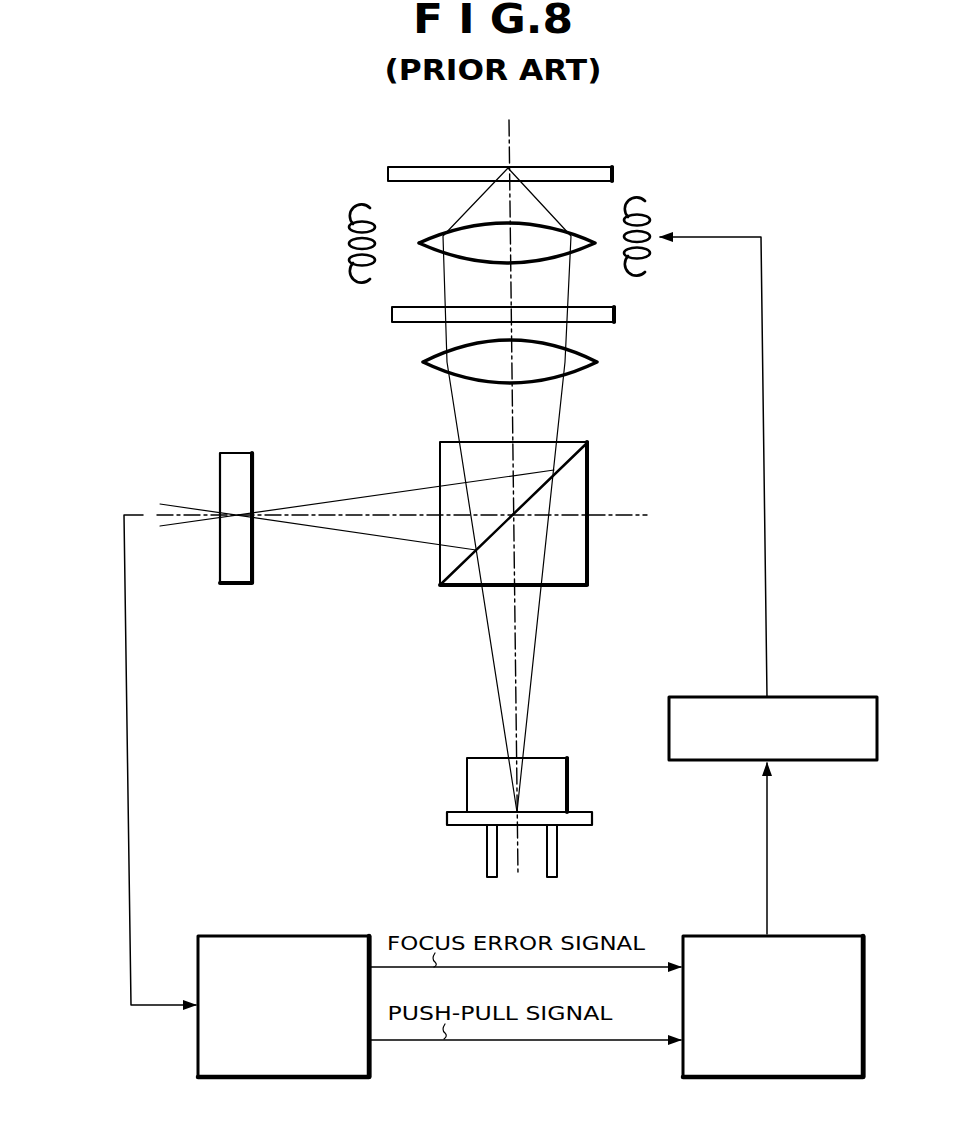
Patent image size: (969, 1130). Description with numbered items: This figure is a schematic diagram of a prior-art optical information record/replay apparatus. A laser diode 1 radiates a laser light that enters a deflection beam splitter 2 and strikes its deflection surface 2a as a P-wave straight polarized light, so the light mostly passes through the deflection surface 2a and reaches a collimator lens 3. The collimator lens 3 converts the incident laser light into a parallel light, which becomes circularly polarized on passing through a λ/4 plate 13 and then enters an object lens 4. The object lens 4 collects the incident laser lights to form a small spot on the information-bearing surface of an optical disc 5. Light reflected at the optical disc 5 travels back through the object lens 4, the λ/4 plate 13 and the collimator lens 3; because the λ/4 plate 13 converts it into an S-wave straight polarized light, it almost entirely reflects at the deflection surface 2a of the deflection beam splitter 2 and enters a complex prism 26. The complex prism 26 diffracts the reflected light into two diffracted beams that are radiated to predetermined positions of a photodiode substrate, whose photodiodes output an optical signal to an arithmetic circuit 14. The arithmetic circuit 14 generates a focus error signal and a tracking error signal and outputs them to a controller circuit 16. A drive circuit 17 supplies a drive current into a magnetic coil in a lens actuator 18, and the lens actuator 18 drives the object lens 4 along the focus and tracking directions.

The laser diode 1 is at (569, 785).
The deflection beam splitter 2 is at (540, 513).
The deflection surface 2a is at (540, 491).
The collimator lens 3 is at (597, 362).
The object lens 4 is at (433, 232).
The optical disc 5 is at (598, 166).
The λ/4 plate 13 is at (616, 314).
The arithmetic circuit 14 is at (302, 1078).
The controller circuit 16 is at (749, 1078).
The drive circuit 17 is at (812, 697).
The lens actuator 18 is at (643, 215).
The complex prism 26 is at (250, 453).